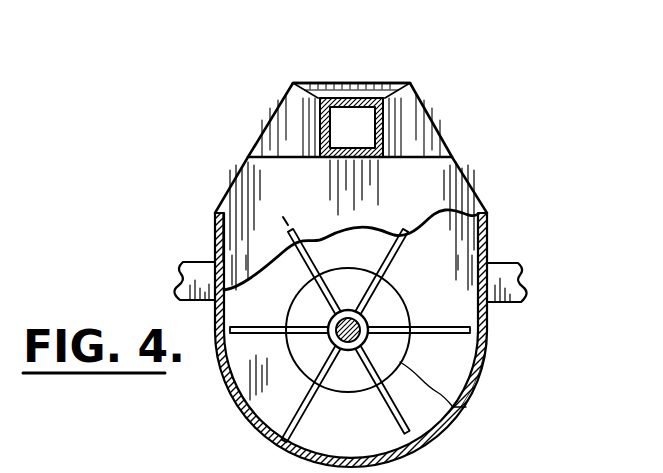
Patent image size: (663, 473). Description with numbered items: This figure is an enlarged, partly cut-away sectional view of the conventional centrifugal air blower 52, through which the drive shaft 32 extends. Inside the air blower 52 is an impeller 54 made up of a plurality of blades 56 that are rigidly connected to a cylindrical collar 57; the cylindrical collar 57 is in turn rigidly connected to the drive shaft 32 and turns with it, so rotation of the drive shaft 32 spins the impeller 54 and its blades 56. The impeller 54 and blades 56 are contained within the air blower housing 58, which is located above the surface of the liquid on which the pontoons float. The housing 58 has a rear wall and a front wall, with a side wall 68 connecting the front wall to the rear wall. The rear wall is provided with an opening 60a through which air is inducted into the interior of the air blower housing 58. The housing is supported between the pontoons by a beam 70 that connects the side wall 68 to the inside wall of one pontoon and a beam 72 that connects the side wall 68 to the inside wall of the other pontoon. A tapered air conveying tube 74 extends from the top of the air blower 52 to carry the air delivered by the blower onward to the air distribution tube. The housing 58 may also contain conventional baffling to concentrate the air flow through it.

The drive shaft 32 is at (378, 313).
The centrifugal air blower 52 is at (436, 99).
The impeller 54 is at (416, 281).
The blades 56 is at (301, 256).
The cylindrical collar 57 is at (351, 307).
The air blower housing 58 is at (281, 108).
The opening 60a is at (466, 407).
The side wall 68 is at (485, 361).
The beam 70 is at (203, 272).
The beam 72 is at (520, 277).
The tapered air conveying tube 74 is at (349, 94).